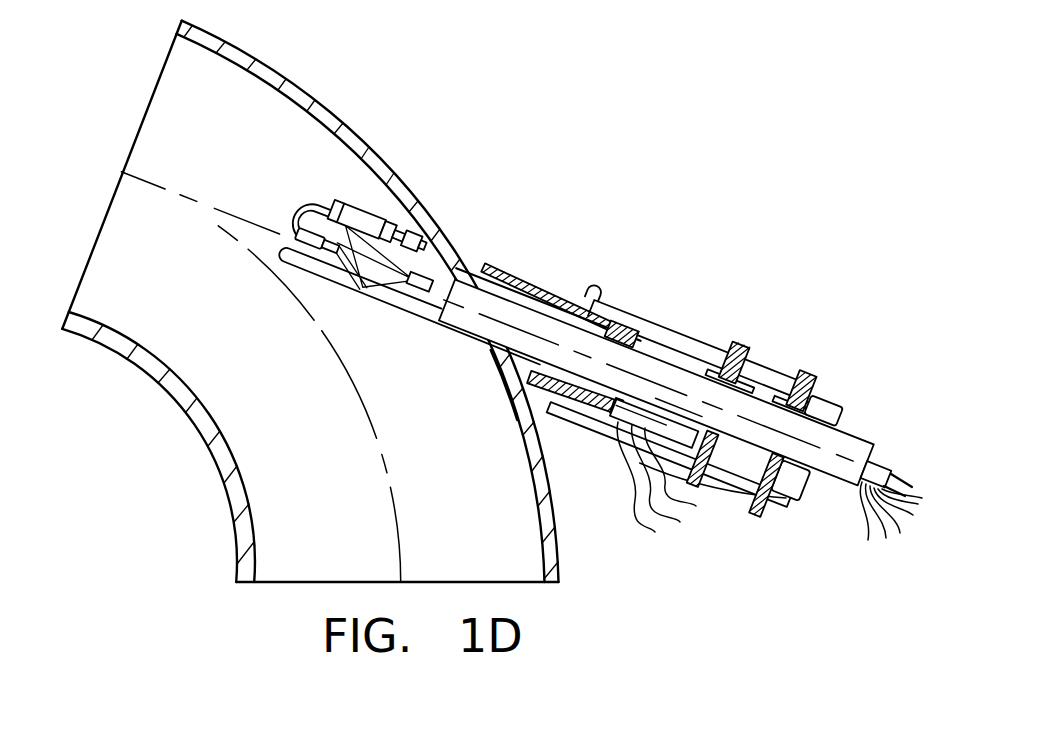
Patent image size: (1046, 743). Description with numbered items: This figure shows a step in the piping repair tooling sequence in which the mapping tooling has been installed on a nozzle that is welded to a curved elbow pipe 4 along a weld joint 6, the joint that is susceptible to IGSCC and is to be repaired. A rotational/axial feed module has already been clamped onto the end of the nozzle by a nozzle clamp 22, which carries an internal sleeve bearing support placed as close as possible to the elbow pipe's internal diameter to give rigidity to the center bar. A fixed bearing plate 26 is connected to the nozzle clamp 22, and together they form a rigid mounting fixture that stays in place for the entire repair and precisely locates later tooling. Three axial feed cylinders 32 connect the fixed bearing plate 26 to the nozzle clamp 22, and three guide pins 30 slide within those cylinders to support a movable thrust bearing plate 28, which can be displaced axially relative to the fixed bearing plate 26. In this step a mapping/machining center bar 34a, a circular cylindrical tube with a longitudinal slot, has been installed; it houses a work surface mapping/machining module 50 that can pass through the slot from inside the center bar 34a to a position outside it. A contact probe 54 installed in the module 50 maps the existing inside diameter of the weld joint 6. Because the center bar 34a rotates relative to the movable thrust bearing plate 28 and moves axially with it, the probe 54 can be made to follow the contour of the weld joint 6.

The curved elbow pipe 4 is at (350, 117).
The weld joint 6 is at (496, 368).
The nozzle clamp 22 is at (577, 298).
The fixed bearing plate 26 is at (742, 343).
The movable thrust bearing plate 28 is at (762, 514).
The guide pins 30 is at (740, 495).
The axial feed cylinders 32 is at (682, 325).
The mapping/machining center bar 34a is at (459, 338).
The work surface mapping/machining module 50 is at (364, 206).
The contact probe 54 is at (421, 232).